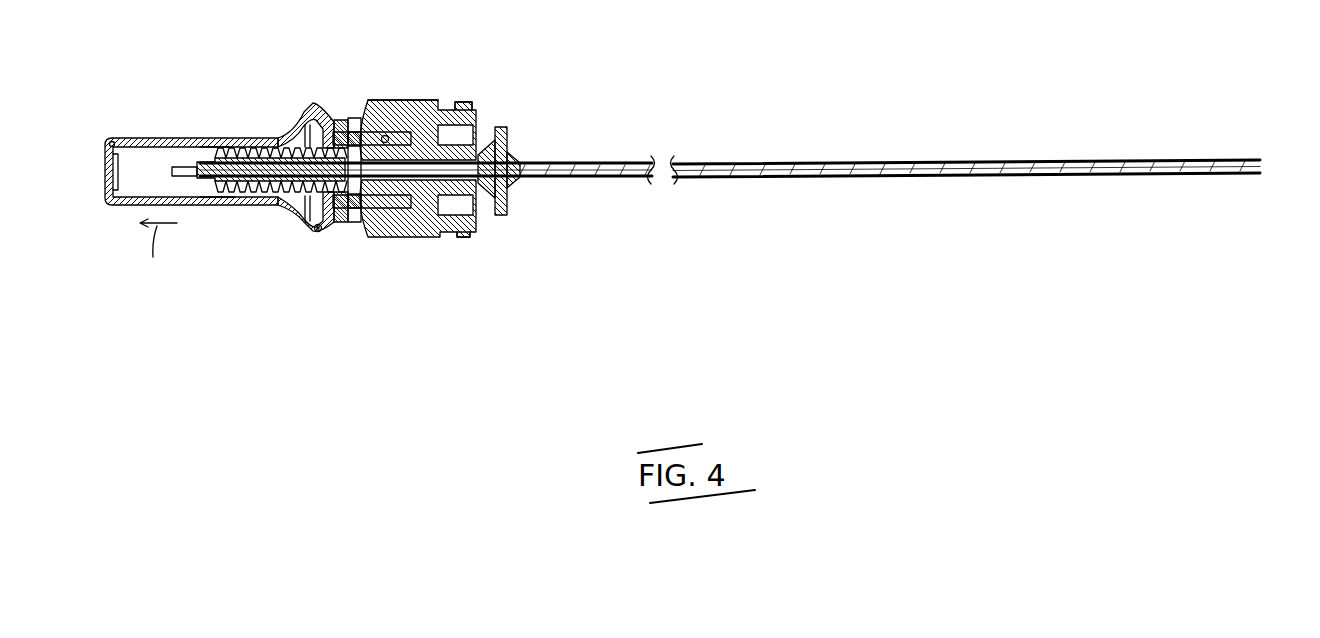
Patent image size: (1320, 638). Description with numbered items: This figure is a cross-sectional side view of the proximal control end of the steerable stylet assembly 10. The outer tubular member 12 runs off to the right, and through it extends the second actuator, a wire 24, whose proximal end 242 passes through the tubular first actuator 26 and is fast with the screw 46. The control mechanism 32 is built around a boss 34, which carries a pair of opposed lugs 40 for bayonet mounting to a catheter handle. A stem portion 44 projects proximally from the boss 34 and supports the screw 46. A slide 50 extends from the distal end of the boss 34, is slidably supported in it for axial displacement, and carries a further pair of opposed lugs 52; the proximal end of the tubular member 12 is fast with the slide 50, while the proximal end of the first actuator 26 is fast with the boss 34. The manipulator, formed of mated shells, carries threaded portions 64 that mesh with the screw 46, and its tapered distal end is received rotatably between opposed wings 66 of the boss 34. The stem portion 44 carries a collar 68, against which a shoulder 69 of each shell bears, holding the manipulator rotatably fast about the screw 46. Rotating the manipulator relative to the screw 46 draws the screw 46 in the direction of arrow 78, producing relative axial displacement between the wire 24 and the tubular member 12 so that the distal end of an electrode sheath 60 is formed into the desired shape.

The steerable stylet assembly 10 is at (798, 89).
The outer tubular member 12 is at (742, 163).
The second actuator 24 is at (888, 180).
The first actuator 26 is at (513, 157).
The control mechanism 32 is at (321, 52).
The boss 34 is at (405, 102).
The lugs 40 is at (468, 102).
The stem portion 44 is at (313, 233).
The screw 46 is at (280, 212).
The slide 50 is at (512, 188).
The lugs 52 is at (501, 130).
The electrode sheath 60 is at (135, 136).
The threaded portion 64 is at (224, 149).
The wings 66 is at (374, 108).
The collar 68 is at (346, 136).
The shoulder 69 is at (361, 128).
The arrow 78 is at (157, 252).
The proximal end of second actuator 242 is at (208, 157).